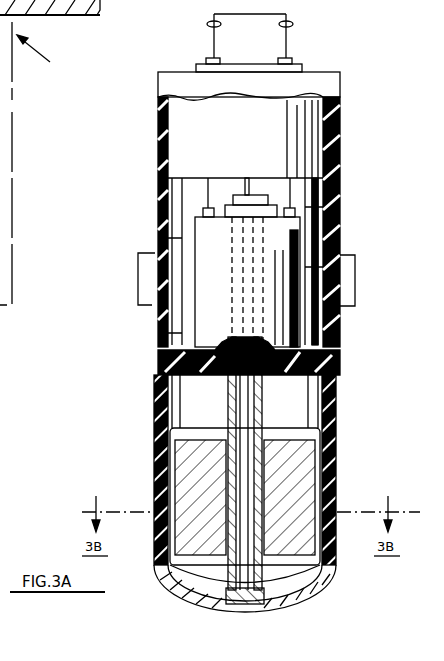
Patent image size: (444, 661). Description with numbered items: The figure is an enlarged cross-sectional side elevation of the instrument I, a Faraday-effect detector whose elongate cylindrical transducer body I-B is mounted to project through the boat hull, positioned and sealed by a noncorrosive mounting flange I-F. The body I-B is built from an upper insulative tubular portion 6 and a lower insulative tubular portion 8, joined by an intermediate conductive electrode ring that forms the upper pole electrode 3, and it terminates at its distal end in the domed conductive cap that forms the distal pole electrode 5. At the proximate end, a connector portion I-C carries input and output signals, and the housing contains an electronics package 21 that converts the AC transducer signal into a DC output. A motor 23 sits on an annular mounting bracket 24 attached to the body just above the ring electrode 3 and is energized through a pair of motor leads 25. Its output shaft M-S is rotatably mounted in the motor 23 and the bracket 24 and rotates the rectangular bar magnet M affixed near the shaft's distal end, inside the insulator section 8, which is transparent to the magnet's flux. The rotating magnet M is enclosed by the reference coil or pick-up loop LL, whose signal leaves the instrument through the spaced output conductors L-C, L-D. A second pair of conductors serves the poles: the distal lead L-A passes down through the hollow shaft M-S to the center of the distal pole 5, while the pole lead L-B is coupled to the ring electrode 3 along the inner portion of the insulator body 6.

The instrument I is at (344, 92).
The connector portion I-C is at (292, 50).
The electronics package 21 is at (245, 139).
The motor leads 25 is at (273, 180).
The motor 23 is at (168, 265).
The mounting bracket 24 is at (160, 338).
The upper pole electrode 3 is at (338, 406).
The lower insulative tubular portion 8 is at (160, 478).
The distal pole electrode 5 is at (168, 577).
The upper insulative tubular portion 6 is at (340, 135).
The distal lead L-A is at (245, 182).
The pole lead L-B is at (160, 185).
The output conductor L-C is at (338, 260).
The output conductor L-D is at (160, 232).
The transducer body I-B is at (340, 222).
The mounting flange I-F is at (350, 277).
The reference coil LL is at (158, 390).
The bar magnet M is at (336, 455).
The output shaft M-S is at (260, 470).